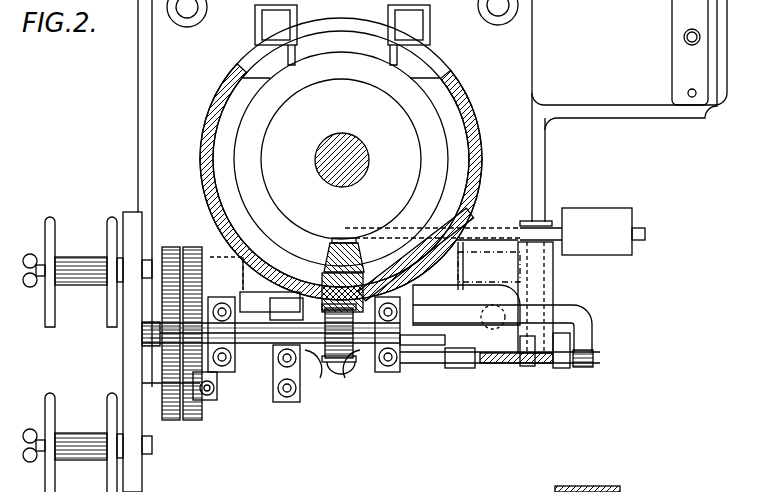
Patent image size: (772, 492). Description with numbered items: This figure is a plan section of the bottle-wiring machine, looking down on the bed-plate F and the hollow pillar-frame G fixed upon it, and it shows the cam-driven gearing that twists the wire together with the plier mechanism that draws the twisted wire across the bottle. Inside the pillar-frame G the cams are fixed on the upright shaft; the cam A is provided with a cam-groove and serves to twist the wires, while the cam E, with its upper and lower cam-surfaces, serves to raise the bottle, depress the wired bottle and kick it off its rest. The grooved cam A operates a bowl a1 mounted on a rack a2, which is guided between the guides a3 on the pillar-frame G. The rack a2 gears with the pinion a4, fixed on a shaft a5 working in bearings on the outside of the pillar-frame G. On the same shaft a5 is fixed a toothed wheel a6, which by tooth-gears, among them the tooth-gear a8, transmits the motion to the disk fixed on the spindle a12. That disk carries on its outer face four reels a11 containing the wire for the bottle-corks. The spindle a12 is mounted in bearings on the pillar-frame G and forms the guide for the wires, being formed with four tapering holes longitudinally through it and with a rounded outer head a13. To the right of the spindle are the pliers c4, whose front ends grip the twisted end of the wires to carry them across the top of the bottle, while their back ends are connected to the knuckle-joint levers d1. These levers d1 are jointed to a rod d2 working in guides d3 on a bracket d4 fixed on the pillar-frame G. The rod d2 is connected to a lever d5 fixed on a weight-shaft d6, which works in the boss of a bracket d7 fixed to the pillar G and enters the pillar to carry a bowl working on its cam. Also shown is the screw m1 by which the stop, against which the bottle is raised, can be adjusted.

The bed-plate F is at (425, 246).
The hollow pillar-frame G is at (240, 74).
The cam A is at (442, 168).
The cam E is at (342, 160).
The bowl a1 is at (344, 255).
The guides a3 is at (368, 282).
The shaft a5 is at (271, 308).
The pinion a4 is at (339, 329).
The tooth-gear a8 is at (173, 247).
The toothed wheel a6 is at (193, 247).
The rack a2 is at (139, 357).
The spindle a12 is at (246, 328).
The rounded outer head a13 is at (304, 372).
The screw m1 is at (348, 372).
The reels a11 is at (73, 354).
The weight-shaft d6 is at (478, 226).
The bracket d7 is at (505, 287).
The bracket d4 is at (506, 319).
The pliers c4 is at (500, 358).
The knuckle-joint levers d1 is at (470, 346).
The guides d3 is at (525, 350).
The rod d2 is at (532, 369).
The lever d5 is at (585, 365).